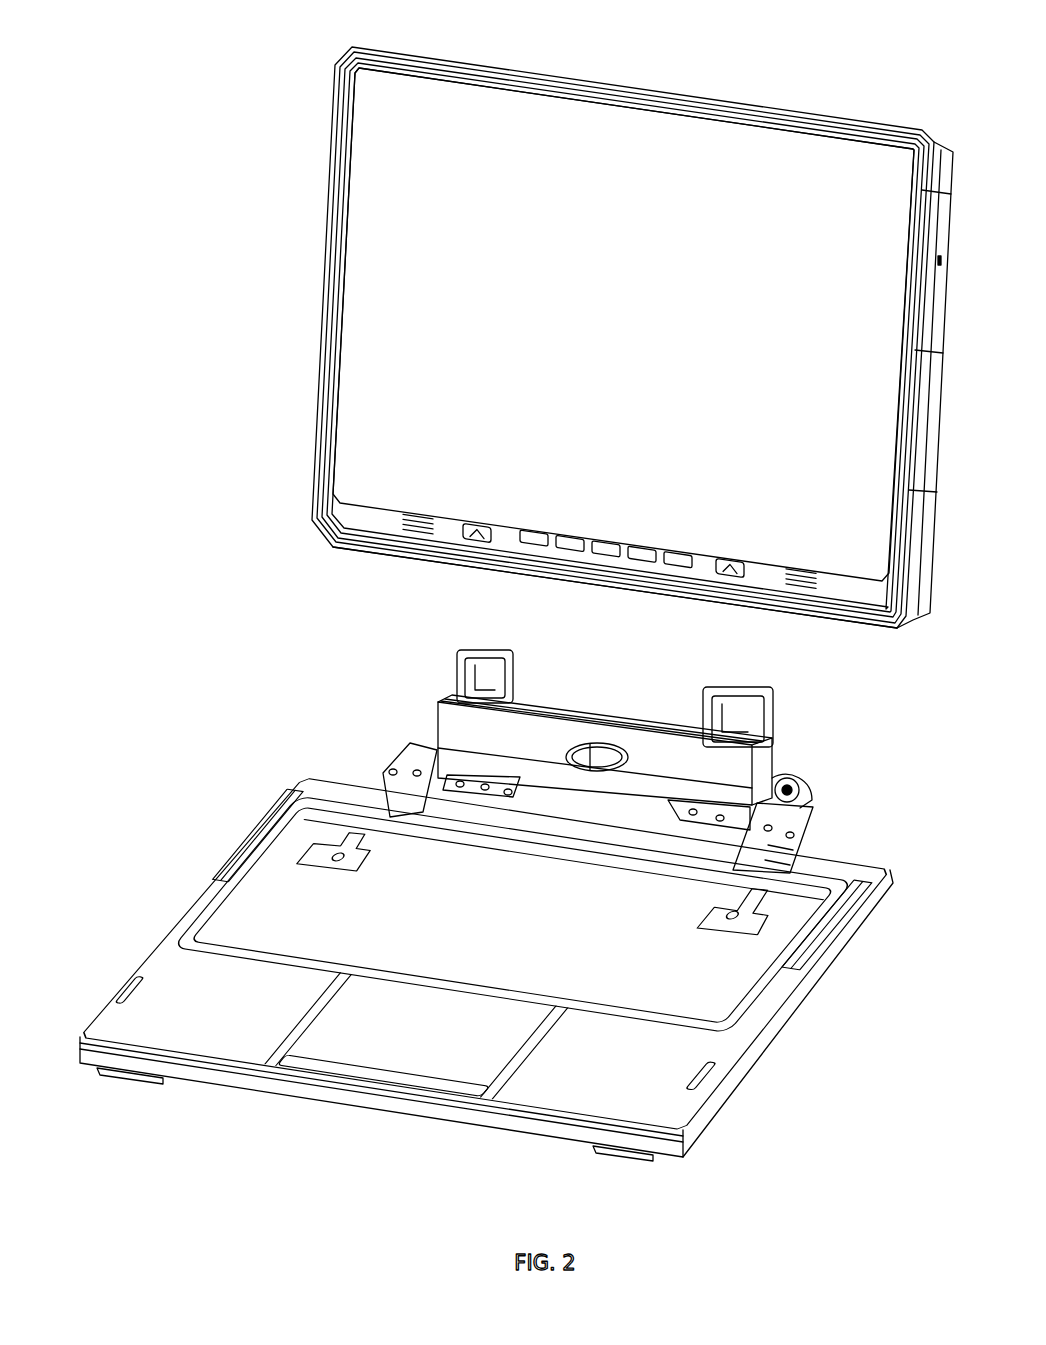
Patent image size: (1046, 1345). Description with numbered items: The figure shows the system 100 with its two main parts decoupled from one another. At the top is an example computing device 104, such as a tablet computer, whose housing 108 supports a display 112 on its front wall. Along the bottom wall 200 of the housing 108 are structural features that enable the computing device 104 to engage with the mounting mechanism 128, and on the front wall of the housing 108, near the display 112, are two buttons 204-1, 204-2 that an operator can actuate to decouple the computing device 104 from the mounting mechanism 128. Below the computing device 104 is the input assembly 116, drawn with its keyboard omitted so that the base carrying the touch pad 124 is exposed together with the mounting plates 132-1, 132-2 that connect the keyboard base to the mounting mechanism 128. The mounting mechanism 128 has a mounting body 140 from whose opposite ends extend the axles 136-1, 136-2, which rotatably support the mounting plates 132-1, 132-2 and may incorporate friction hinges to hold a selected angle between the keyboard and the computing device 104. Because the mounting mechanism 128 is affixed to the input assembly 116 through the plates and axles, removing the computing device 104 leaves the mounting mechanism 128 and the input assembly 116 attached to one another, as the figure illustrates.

The system 100 is at (232, 117).
The computing device 104 is at (846, 116).
The housing 108 is at (325, 250).
The display 112 is at (643, 315).
The input assembly 116 is at (150, 907).
The touch pad 124 is at (343, 1042).
The mounting mechanism 128 is at (416, 686).
The mounting plate 132-1 is at (328, 847).
The mounting plate 132-2 is at (757, 915).
The axle 136-1 is at (420, 745).
The axle 136-2 is at (800, 792).
The mounting body 140 is at (662, 745).
The bottom wall 200 is at (358, 550).
The button 204-1 is at (479, 526).
The button 204-2 is at (730, 566).